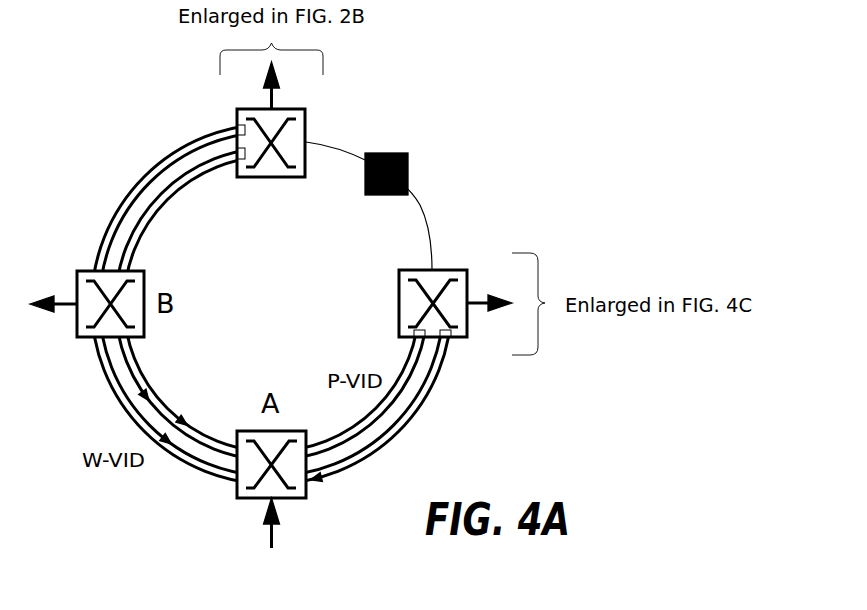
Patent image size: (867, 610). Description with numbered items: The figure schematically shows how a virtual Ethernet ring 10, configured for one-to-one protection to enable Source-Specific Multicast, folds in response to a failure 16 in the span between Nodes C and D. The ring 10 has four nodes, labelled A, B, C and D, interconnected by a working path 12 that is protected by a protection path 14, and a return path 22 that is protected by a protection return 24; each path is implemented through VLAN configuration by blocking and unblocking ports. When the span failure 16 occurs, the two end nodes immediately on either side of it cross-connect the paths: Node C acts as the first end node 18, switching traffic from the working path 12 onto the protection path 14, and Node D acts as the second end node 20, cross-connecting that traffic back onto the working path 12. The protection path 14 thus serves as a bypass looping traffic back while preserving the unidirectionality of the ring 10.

The Ethernet ring 10 is at (517, 191).
The working path 12 is at (138, 175).
The protection path 14 is at (167, 198).
The span failure 16 is at (408, 154).
The first end node 18 is at (307, 114).
The second end node 20 is at (475, 340).
The return path 22 is at (190, 150).
The protection return 24 is at (185, 178).